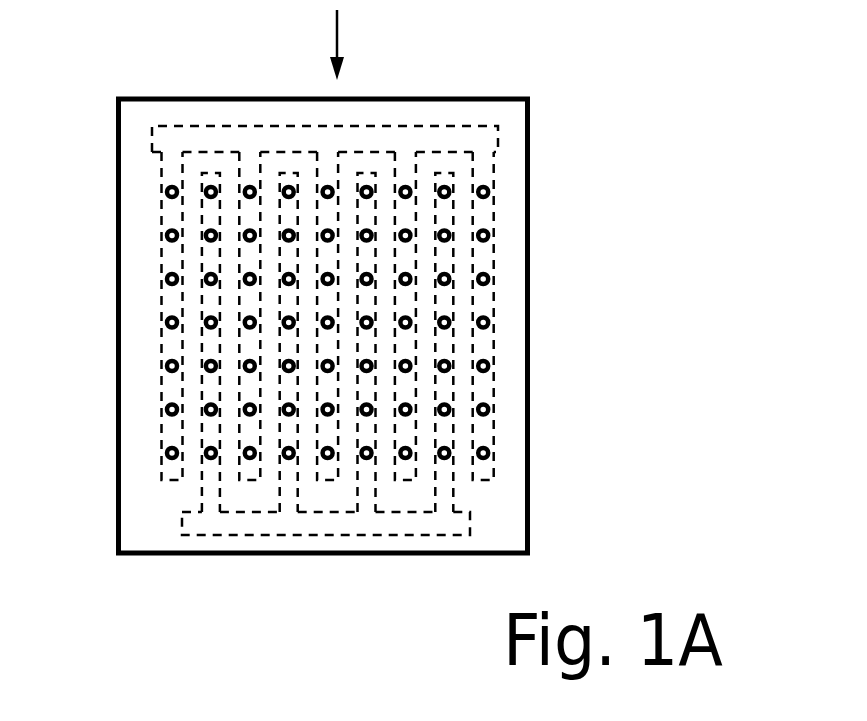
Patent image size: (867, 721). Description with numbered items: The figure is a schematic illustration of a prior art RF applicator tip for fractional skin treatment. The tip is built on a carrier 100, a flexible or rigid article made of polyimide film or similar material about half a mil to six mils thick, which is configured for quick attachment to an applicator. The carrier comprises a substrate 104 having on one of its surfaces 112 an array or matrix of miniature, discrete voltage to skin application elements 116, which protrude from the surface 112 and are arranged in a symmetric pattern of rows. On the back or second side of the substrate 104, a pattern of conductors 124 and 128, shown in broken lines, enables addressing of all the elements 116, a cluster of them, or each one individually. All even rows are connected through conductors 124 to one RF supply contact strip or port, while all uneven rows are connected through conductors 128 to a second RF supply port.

The carrier 100 is at (205, 60).
The substrate 104 is at (515, 318).
The surface 112 is at (510, 502).
The voltage to skin application elements 116 is at (172, 357).
The conductors 124 is at (205, 522).
The conductors 128 is at (483, 137).